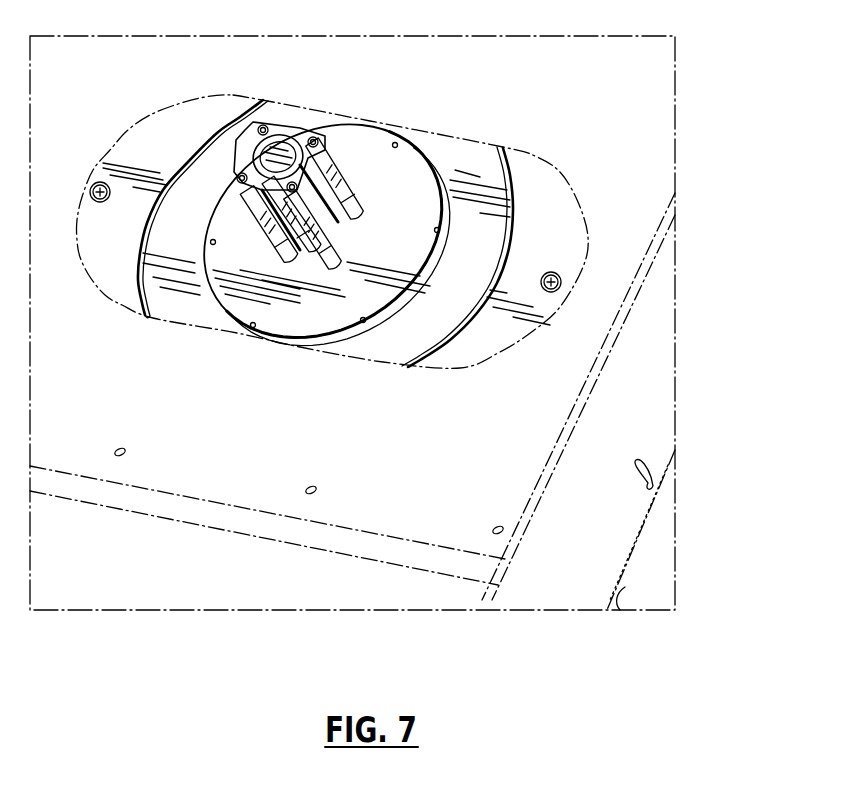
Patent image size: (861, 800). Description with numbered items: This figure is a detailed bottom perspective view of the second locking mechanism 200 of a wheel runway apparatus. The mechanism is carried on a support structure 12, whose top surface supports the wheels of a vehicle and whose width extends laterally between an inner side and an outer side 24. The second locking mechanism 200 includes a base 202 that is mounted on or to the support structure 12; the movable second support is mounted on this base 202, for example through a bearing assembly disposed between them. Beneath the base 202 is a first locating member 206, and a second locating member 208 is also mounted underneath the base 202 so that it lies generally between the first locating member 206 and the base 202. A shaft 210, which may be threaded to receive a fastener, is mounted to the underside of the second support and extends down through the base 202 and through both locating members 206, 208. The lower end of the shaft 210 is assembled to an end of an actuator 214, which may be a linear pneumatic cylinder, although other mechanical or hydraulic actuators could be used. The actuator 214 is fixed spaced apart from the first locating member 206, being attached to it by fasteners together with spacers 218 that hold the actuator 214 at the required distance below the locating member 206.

The support structure 12 is at (658, 541).
The outer side 24 is at (590, 555).
The second locking mechanism 200 is at (194, 367).
The base 202 is at (333, 286).
The first locating member 206 is at (298, 323).
The second locating member 208 is at (359, 322).
The shaft 210 is at (364, 236).
The actuator 214 is at (342, 163).
The spacers 218 is at (340, 230).